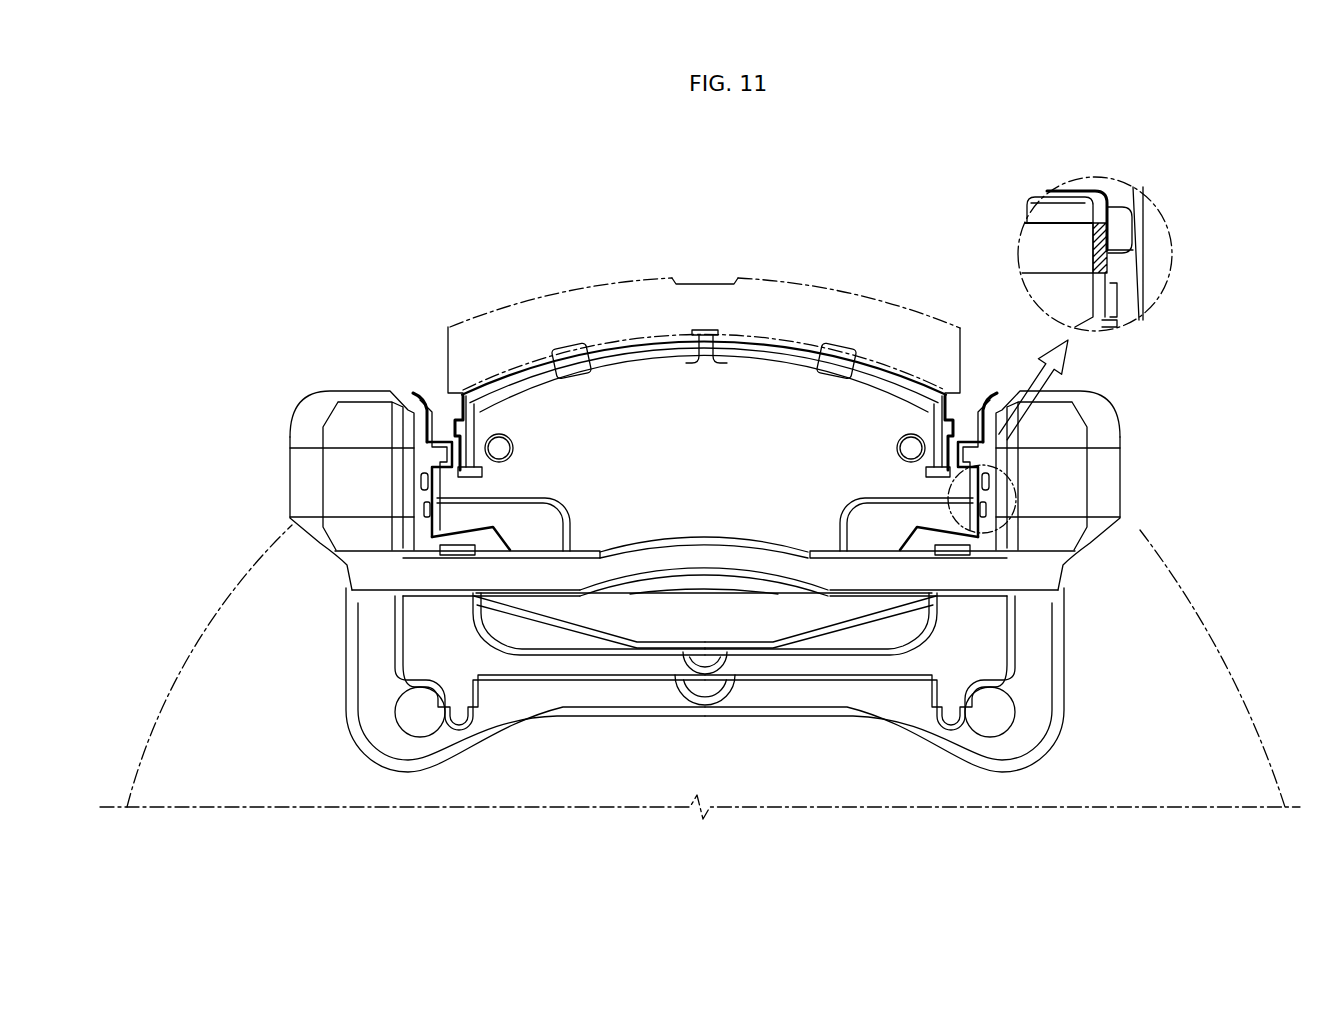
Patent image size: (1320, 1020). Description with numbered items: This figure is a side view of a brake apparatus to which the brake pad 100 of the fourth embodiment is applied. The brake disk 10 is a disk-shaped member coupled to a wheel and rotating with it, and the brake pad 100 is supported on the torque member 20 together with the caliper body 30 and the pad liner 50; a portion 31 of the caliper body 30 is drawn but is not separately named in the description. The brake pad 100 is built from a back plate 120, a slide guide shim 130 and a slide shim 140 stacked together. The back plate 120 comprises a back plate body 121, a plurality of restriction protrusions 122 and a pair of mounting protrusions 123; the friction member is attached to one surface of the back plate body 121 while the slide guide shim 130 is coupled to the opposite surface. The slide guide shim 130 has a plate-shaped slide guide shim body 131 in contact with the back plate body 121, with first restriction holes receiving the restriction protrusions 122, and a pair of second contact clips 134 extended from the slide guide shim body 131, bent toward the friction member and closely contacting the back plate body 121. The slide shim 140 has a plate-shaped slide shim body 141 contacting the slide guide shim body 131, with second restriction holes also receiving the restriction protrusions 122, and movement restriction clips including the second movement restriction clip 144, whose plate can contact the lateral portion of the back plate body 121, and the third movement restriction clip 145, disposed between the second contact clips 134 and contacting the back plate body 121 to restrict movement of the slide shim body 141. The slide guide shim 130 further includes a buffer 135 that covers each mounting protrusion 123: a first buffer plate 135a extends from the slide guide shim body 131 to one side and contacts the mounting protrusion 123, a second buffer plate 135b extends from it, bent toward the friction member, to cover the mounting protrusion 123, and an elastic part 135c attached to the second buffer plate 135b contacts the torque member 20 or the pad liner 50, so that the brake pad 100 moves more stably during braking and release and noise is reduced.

The brake disk 10 is at (1137, 583).
The torque member 20 is at (1032, 700).
The caliper body 30 is at (898, 307).
The notch 31 is at (700, 338).
The pad liner 50 is at (425, 407).
The brake pad 100 is at (691, 334).
The back plate 120 is at (574, 498).
The back plate body 121 is at (520, 545).
The restriction protrusions 122 is at (420, 484).
The mounting protrusions 123 is at (452, 513).
The slide guide shim 130 is at (577, 366).
The slide guide shim body 131 is at (643, 360).
The second contact clips 134 is at (840, 360).
The buffer 135 is at (1040, 223).
The first buffer plate 135a is at (1055, 267).
The second buffer plate 135b is at (1109, 203).
The elastic part 135c is at (1107, 263).
The slide shim 140 is at (657, 505).
The slide shim body 141 is at (745, 400).
The second movement restriction clip 144 is at (455, 418).
The third movement restriction clip 145 is at (712, 345).